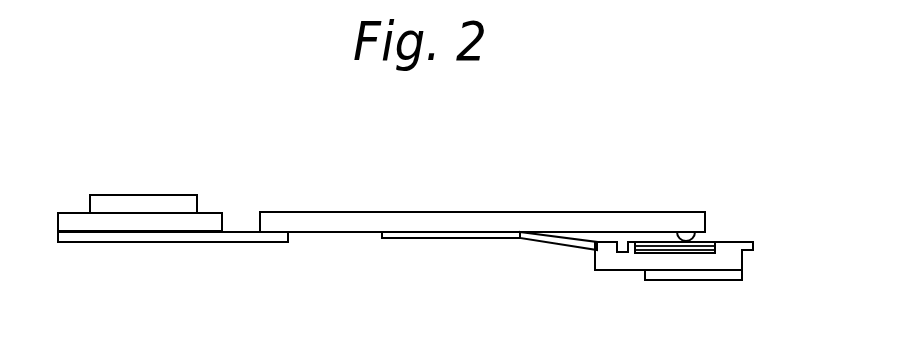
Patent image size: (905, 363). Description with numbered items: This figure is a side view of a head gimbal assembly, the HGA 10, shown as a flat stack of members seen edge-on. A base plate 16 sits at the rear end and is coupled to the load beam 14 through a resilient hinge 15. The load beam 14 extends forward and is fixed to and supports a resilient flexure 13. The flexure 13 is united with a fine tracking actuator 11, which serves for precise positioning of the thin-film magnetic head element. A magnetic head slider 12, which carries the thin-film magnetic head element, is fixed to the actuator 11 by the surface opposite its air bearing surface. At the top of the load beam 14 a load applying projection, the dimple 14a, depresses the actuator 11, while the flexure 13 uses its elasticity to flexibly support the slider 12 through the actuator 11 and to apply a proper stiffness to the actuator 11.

The HGA 10 is at (512, 158).
The fine tracking actuator 11 is at (620, 270).
The magnetic head slider 12 is at (702, 281).
The resilient flexure 13 is at (463, 240).
The load beam 14 is at (614, 212).
The dimple 14a is at (705, 241).
The resilient hinge 15 is at (250, 235).
The base plate 16 is at (205, 217).